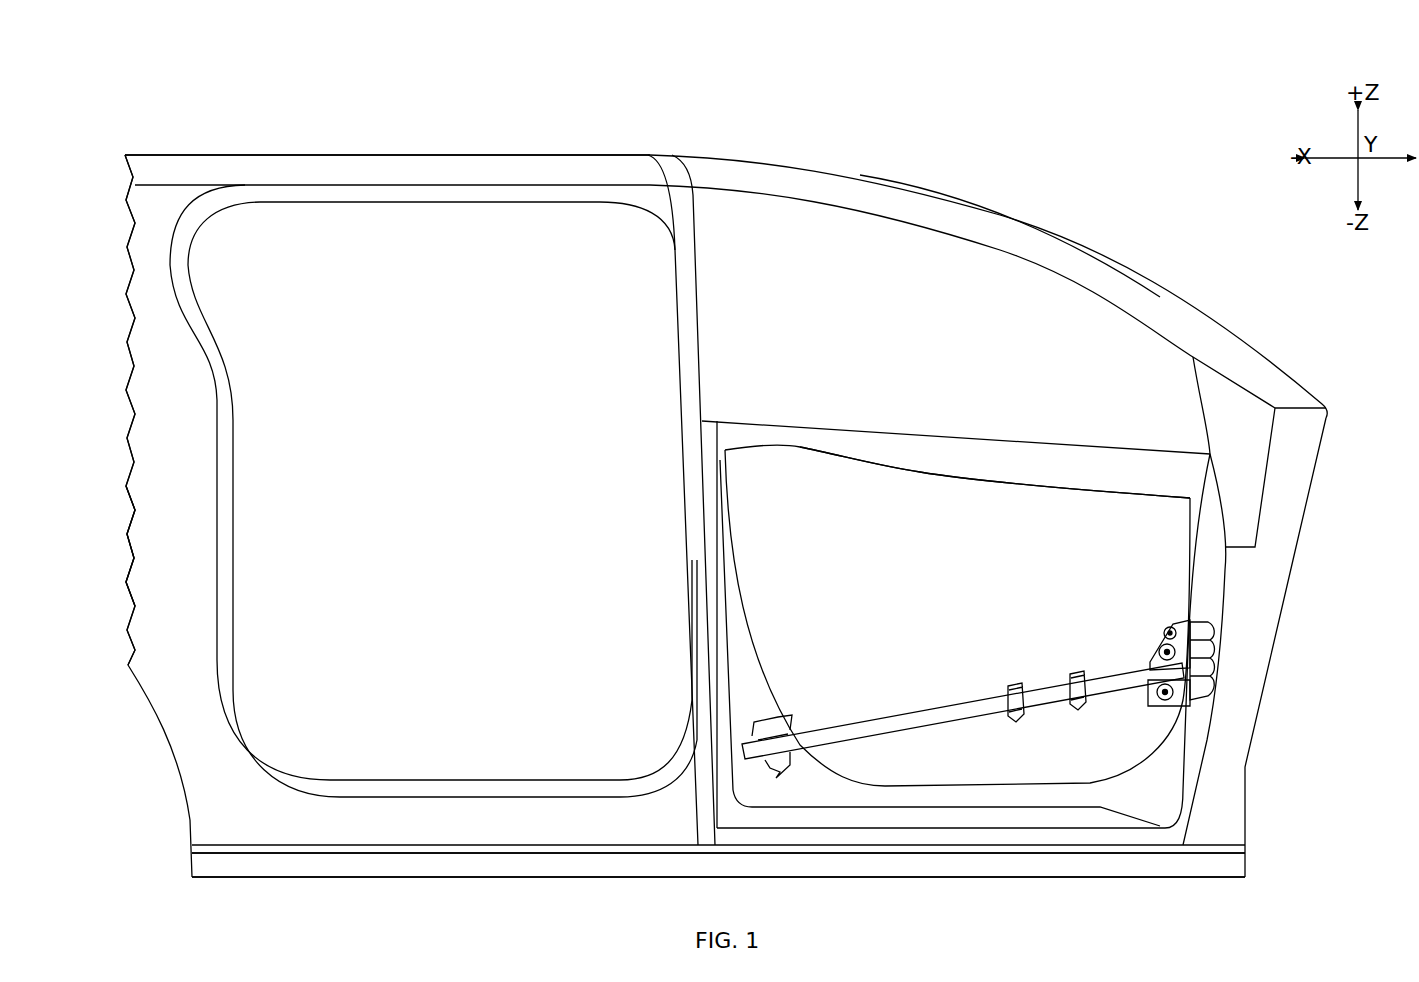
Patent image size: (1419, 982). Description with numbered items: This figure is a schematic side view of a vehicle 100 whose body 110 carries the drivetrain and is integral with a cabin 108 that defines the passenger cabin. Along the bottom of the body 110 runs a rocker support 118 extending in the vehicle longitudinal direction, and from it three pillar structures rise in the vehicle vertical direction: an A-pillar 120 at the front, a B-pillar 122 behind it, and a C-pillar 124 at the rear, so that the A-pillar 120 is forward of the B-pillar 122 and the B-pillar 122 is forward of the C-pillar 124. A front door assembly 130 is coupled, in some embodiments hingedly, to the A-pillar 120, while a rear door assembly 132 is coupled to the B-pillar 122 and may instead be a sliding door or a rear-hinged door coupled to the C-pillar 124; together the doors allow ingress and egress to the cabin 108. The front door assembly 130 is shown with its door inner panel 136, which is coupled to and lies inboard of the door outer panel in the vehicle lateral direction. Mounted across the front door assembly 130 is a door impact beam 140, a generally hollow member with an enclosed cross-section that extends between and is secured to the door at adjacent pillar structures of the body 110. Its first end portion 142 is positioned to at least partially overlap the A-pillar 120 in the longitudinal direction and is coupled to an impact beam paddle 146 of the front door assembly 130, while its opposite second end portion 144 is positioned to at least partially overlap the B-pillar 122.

The vehicle 100 is at (406, 116).
The body 110 is at (180, 120).
The cabin 108 is at (430, 343).
The rocker support 118 is at (905, 866).
The A-pillar 120 is at (1243, 406).
The B-pillar 122 is at (706, 292).
The C-pillar 124 is at (140, 422).
The front door assembly 130 is at (1060, 216).
The rear door assembly 132 is at (111, 316).
The door inner panel 136 is at (945, 492).
The door impact beam 140 is at (890, 700).
The first end portion 142 is at (1158, 668).
The second end portion 144 is at (745, 738).
The impact beam paddle 146 is at (1148, 700).